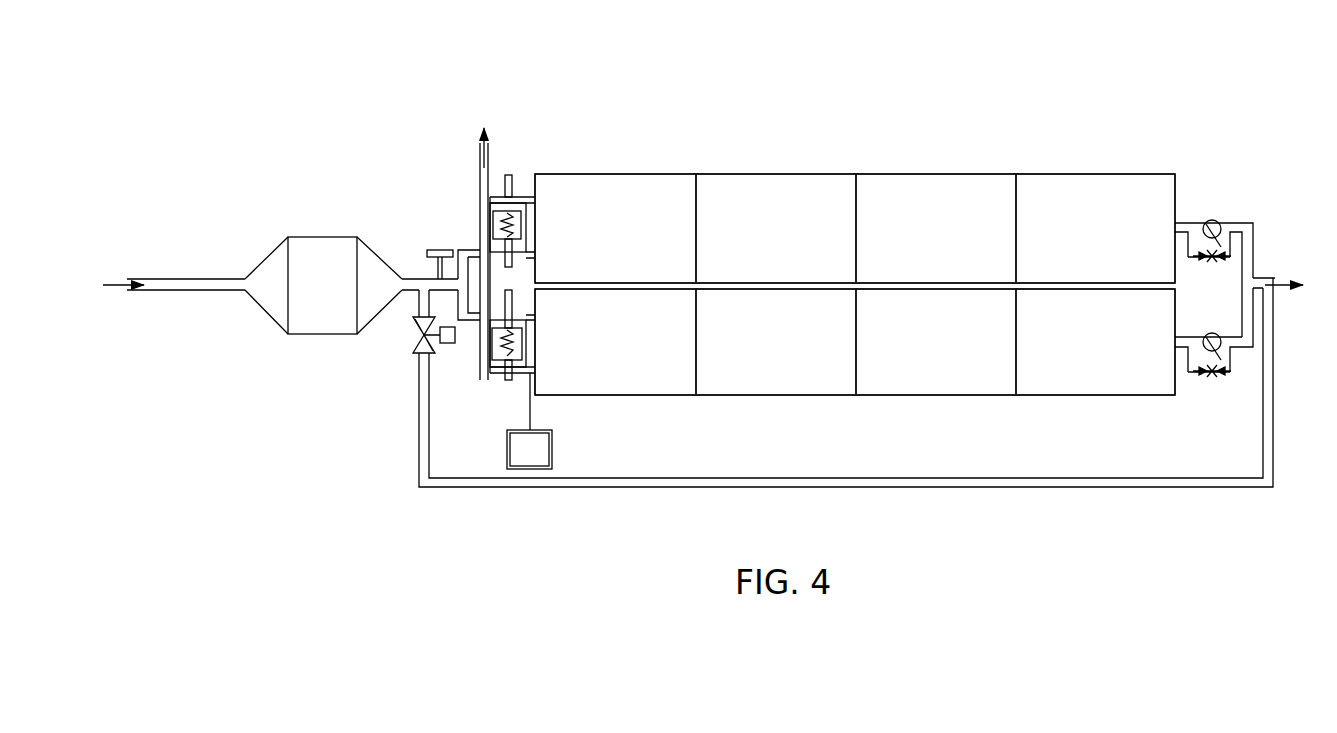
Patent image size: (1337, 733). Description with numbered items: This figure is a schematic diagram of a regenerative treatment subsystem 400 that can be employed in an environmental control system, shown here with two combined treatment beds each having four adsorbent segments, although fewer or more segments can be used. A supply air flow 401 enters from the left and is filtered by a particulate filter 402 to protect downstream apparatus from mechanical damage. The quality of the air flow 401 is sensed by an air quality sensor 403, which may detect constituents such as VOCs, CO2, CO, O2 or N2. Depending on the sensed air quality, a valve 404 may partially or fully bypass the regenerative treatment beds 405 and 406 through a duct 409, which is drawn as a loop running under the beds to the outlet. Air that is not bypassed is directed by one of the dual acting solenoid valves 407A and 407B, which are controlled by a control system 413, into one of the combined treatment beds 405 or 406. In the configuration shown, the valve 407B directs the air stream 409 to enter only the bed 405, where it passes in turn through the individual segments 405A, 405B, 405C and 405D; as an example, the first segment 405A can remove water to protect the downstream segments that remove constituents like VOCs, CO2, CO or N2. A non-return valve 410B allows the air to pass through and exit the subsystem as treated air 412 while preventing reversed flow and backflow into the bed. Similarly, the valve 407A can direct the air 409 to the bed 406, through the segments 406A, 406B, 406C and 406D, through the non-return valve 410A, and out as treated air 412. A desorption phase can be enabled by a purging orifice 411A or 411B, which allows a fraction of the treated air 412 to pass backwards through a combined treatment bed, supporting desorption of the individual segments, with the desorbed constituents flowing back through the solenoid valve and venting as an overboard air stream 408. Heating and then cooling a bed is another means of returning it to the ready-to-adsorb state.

The regenerative treatment subsystem 400 is at (1120, 86).
The supply air flow 401 is at (143, 279).
The particulate filter 402 is at (300, 297).
The air quality sensor 403 is at (433, 252).
The valve 404 is at (414, 346).
The combined treatment bed 405 is at (688, 404).
The first segment 405A is at (585, 354).
The segment 405B is at (745, 354).
The segment 405C is at (905, 354).
The segment 405D is at (1065, 354).
The combined treatment bed 406 is at (724, 155).
The segment 406A is at (585, 240).
The segment 406B is at (745, 240).
The segment 406C is at (905, 240).
The segment 406D is at (1065, 240).
The dual acting solenoid valve 407A is at (490, 228).
The dual acting solenoid valve 407B is at (492, 362).
The overboard air stream 408 is at (502, 140).
The duct 409 is at (405, 279).
The non-return valve 410A is at (1208, 220).
The non-return valve 410B is at (1205, 333).
The purging orifice 411A is at (1218, 258).
The purging orifice 411B is at (1213, 373).
The treated air 412 is at (1280, 300).
The control system 413 is at (512, 462).